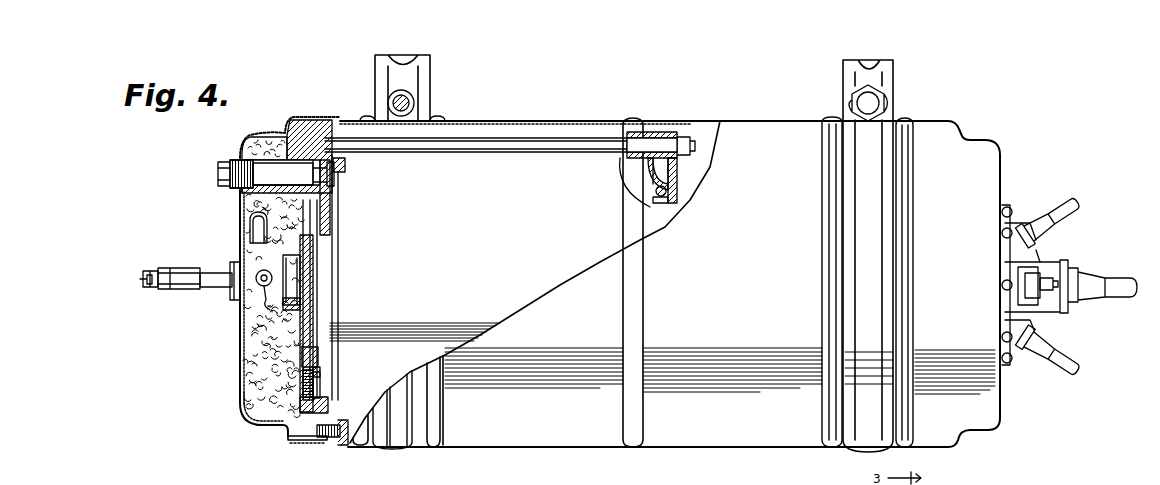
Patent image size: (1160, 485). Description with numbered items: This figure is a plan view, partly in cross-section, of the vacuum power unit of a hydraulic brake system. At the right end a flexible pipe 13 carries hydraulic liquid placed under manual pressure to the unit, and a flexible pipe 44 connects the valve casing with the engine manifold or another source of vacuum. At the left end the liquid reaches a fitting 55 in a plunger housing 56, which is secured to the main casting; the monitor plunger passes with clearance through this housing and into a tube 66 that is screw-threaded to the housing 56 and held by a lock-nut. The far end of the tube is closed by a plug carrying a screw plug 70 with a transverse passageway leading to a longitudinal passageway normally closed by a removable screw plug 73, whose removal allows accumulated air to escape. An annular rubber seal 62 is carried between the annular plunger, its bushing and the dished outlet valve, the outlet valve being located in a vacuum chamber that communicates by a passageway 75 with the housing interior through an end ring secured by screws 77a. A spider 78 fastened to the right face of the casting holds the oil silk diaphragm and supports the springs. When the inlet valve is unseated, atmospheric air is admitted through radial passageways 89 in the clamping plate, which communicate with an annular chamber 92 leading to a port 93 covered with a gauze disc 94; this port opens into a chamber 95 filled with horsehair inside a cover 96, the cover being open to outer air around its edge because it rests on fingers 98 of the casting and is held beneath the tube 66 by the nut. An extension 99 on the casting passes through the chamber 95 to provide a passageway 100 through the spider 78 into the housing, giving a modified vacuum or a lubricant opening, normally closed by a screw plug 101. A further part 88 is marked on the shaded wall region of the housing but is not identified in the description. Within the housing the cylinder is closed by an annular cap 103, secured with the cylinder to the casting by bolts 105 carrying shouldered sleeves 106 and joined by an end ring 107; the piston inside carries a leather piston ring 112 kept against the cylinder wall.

The flexible pipe 13 is at (1118, 287).
The flexible pipe 44 is at (1052, 278).
The fitting 55 is at (258, 234).
The plunger housing 56 is at (246, 300).
The annular rubber seal 62 is at (322, 290).
The tube 66 is at (192, 290).
The screw plug 70 is at (150, 288).
The removable screw plug 73 is at (146, 281).
The passageway 75 is at (265, 287).
The screws 77a is at (326, 438).
The spider 78 is at (358, 150).
The shading lines / wall 88 is at (326, 324).
The radial passageways 89 is at (331, 260).
The annular chamber 92 is at (322, 386).
The port 93 is at (321, 372).
The gauze disc 94 is at (274, 307).
The chamber 95 is at (249, 410).
The cover 96 is at (242, 372).
The fingers 98 is at (300, 439).
The extension 99 is at (243, 201).
The passageway 100 is at (268, 170).
The screw plug 101 is at (228, 182).
The annular cap 103 is at (650, 170).
The bolts 105 is at (534, 153).
The shouldered sleeves 106 is at (676, 166).
The end ring 107 is at (657, 198).
The leather piston ring 112 is at (347, 175).